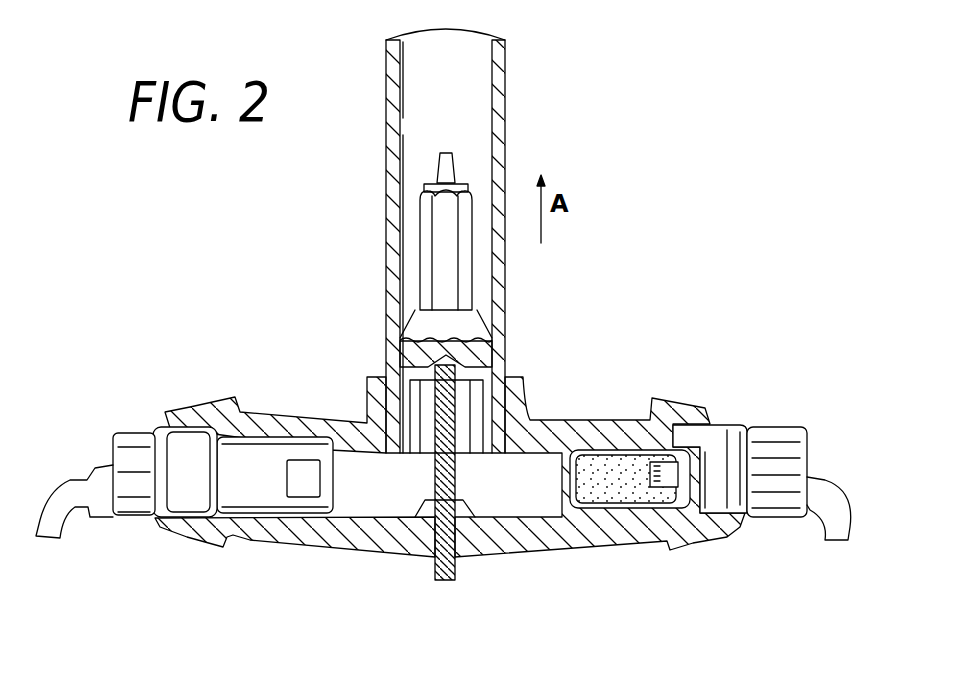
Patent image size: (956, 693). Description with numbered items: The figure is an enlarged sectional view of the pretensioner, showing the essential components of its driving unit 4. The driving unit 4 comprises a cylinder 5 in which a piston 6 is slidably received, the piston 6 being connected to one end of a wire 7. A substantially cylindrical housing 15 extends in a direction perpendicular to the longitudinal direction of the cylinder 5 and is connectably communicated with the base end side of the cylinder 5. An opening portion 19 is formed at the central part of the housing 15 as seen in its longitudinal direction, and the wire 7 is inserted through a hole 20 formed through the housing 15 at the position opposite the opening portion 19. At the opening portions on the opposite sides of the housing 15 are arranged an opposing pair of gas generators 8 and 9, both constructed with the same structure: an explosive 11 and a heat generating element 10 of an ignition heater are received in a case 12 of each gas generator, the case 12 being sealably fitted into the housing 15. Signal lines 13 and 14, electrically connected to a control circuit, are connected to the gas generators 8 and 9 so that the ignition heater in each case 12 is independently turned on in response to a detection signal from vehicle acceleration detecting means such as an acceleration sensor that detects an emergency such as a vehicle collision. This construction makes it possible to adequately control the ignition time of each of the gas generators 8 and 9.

The driving unit 4 is at (557, 303).
The cylinder 5 is at (386, 122).
The piston 6 is at (440, 208).
The wire 7 is at (455, 576).
The gas generator 8 is at (705, 440).
The gas generator 9 is at (268, 472).
The heat generating element 10 is at (648, 474).
The explosive 11 is at (590, 502).
The case 12 is at (600, 440).
The signal line 13 is at (815, 472).
The signal line 14 is at (72, 468).
The housing 15 is at (350, 537).
The opening portion 19 is at (418, 455).
The hole 20 is at (432, 535).